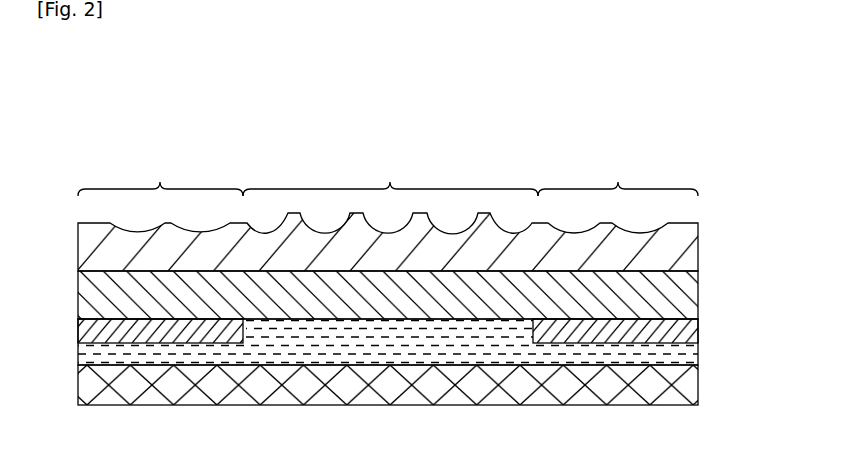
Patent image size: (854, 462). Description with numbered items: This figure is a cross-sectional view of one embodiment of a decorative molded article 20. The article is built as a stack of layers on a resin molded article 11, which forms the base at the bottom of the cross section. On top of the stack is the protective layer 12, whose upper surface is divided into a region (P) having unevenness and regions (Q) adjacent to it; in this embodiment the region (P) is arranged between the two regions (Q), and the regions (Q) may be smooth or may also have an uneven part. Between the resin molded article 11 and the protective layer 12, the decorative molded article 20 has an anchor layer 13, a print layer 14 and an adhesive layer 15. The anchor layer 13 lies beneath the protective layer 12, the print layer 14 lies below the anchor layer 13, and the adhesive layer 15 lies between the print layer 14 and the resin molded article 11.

The decorative molded article 20 is at (417, 122).
The protective layer 12 is at (685, 243).
The anchor layer 13 is at (685, 294).
The print layer 14 is at (685, 331).
The adhesive layer 15 is at (687, 359).
The resin molded article 11 is at (687, 388).